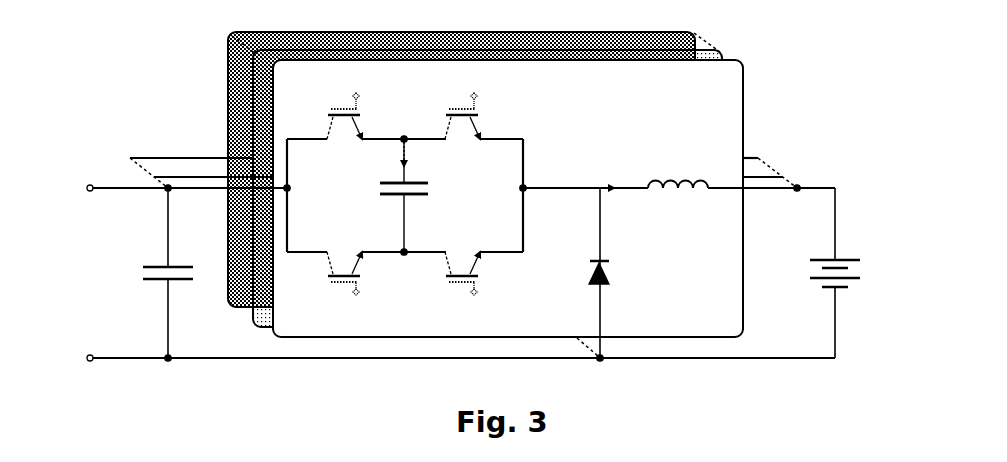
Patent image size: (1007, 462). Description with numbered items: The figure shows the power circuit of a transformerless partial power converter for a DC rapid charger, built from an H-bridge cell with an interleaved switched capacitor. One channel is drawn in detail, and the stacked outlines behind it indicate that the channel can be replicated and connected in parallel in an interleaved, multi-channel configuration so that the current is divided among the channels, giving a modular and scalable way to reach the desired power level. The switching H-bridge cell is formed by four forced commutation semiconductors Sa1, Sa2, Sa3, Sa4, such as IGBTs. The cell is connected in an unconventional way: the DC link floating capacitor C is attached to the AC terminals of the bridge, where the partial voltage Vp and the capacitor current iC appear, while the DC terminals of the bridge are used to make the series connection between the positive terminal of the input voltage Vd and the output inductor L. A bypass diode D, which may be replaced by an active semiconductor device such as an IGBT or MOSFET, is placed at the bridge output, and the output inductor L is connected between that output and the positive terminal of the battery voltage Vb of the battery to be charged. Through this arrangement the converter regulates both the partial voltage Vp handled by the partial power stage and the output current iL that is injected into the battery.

The input voltage Vd is at (151, 273).
The forced commutation semiconductor Sa1 is at (336, 107).
The forced commutation semiconductor Sa2 is at (339, 281).
The forced commutation semiconductor Sa3 is at (454, 107).
The forced commutation semiconductor Sa4 is at (456, 281).
The partial voltage Vp is at (383, 177).
The capacitor current iC is at (418, 156).
The DC link floating capacitor C is at (411, 195).
The output current iL is at (626, 174).
The output inductor L is at (678, 167).
The bypass diode D is at (613, 273).
The battery voltage Vb is at (818, 273).